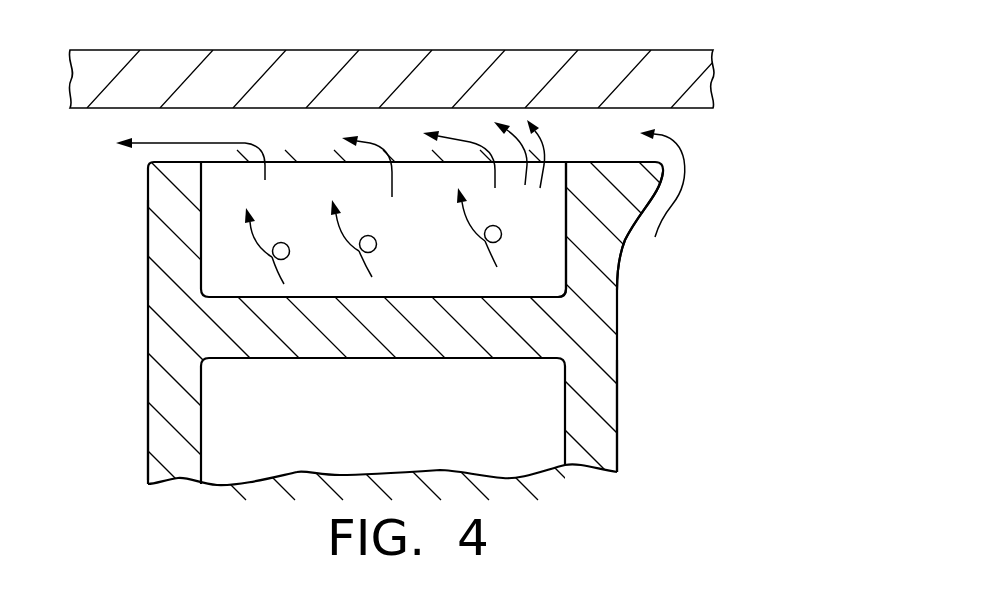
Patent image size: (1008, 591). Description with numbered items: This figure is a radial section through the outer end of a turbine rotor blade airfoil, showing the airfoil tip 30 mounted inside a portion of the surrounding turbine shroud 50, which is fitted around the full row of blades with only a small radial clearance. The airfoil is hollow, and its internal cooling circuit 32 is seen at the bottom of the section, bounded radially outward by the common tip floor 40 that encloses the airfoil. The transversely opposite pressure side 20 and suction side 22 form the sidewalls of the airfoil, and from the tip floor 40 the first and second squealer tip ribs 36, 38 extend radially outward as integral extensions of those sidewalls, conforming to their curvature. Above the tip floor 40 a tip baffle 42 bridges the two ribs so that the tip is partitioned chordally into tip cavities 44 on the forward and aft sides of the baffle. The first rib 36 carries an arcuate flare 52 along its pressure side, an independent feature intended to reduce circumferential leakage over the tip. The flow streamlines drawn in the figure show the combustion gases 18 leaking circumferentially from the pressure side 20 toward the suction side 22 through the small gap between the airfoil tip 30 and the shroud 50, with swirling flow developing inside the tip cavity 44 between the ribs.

The combustion gases 18 is at (681, 187).
The pressure side 20 is at (618, 447).
The suction side 22 is at (148, 432).
The airfoil tip 30 is at (133, 187).
The internal cooling circuit 32 is at (404, 425).
The first squealer tip rib 36 is at (610, 227).
The second squealer tip rib 38 is at (148, 235).
The tip floor 40 is at (389, 341).
The tip baffle 42 is at (321, 162).
The tip cavity 44 is at (430, 243).
The turbine shroud 50 is at (592, 50).
The arcuate flare 52 is at (636, 216).